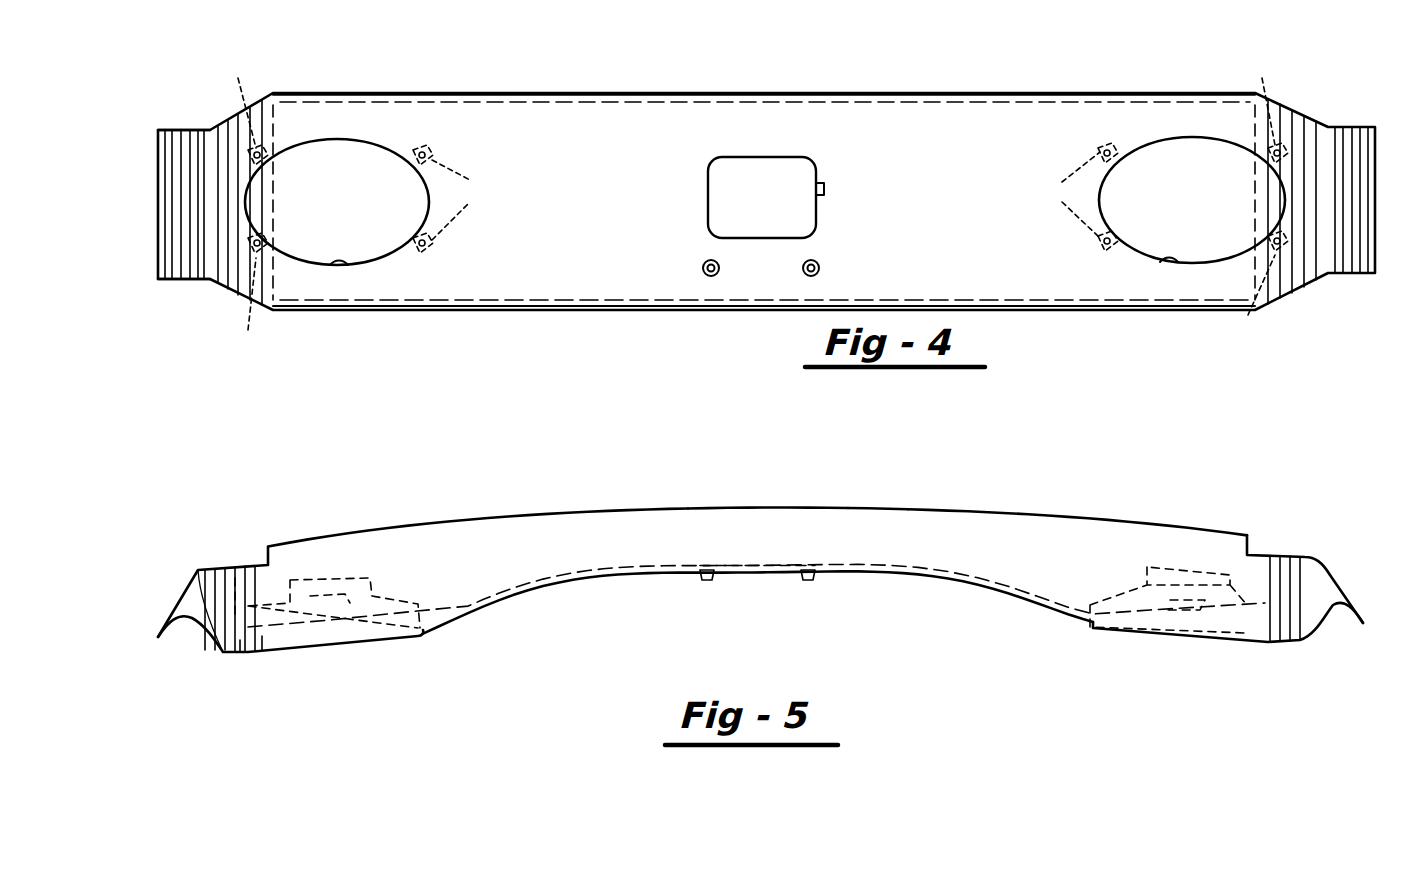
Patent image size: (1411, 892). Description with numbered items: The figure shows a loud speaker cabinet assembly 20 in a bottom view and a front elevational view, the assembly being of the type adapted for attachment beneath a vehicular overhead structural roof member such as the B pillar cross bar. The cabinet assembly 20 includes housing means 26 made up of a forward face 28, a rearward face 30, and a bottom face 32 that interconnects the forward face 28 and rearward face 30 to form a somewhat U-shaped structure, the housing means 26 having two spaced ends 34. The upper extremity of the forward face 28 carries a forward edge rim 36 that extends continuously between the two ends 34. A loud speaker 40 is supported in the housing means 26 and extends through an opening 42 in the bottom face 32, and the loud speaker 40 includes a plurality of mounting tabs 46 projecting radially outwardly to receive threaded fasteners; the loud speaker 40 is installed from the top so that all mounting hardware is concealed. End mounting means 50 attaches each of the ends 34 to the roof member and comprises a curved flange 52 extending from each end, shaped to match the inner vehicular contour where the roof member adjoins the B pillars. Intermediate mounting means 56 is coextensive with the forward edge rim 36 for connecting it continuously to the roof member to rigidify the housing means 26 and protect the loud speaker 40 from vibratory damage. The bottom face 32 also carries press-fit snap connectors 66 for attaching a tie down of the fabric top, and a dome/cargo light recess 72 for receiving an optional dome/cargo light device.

In FIG. 4, the loud speaker cabinet assembly 20 is at (853, 72).
In FIG. 5, the loud speaker cabinet assembly 20 is at (1031, 503).
In FIG. 4, the housing means 26 is at (611, 90).
In FIG. 5, the housing means 26 is at (592, 513).
In FIG. 4, the forward face 28 is at (795, 92).
In FIG. 5, the forward face 28 is at (700, 530).
In FIG. 4, the rearward face 30 is at (412, 315).
In FIG. 4, the bottom face 32 is at (545, 270).
In FIG. 5, the bottom face 32 is at (600, 585).
In FIG. 4, the ends 34 is at (152, 148).
In FIG. 5, the ends 34 is at (165, 632).
In FIG. 5, the forward edge rim 36 is at (908, 510).
In FIG. 4, the loud speaker 40 is at (337, 138).
In FIG. 5, the loud speaker 40 is at (366, 643).
In FIG. 4, the opening 42 is at (335, 265).
In FIG. 5, the opening 42 is at (248, 650).
In FIG. 4, the mounting tabs 46 is at (751, 206).
In FIG. 4, the end mounting means 50 is at (160, 278).
In FIG. 5, the end mounting means 50 is at (178, 629).
In FIG. 4, the curved flange 52 is at (192, 280).
In FIG. 5, the curved flange 52 is at (183, 615).
In FIG. 5, the intermediate mounting means 56 is at (857, 508).
In FIG. 4, the press-fit snap connectors 66 is at (704, 262).
In FIG. 5, the press-fit snap connectors 66 is at (808, 582).
In FIG. 4, the dome/cargo light recess 72 is at (824, 188).
In FIG. 5, the dome/cargo light recess 72 is at (710, 570).